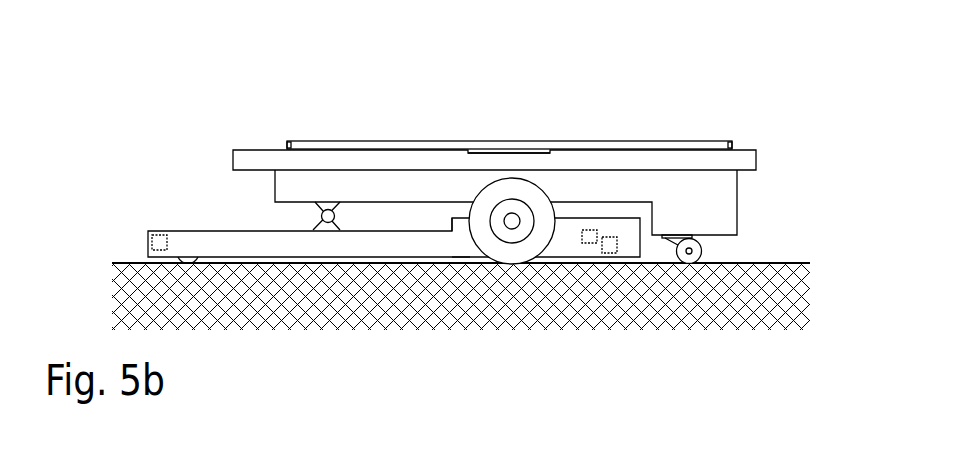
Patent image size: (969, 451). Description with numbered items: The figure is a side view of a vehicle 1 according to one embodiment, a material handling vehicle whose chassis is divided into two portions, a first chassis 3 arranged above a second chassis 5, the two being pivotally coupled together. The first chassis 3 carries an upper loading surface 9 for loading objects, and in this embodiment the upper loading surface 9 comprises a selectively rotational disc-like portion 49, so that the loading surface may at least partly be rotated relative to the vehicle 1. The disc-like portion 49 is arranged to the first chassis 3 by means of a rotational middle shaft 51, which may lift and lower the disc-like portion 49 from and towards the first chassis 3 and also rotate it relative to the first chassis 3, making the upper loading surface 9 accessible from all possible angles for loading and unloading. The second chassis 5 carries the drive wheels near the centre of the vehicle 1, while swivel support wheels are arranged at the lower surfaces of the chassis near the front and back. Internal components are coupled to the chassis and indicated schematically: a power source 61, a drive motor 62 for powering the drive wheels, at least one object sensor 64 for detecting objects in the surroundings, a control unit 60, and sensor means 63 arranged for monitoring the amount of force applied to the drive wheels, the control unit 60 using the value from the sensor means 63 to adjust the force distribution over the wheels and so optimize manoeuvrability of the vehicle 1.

The vehicle 1 is at (227, 63).
The first chassis 3 is at (730, 201).
The second chassis 5 is at (236, 241).
The upper loading surface 9 is at (643, 135).
The selectively rotational disc-like portion 49 is at (701, 146).
The rotational middle shaft 51 is at (520, 152).
The control unit 60 is at (587, 243).
The power source 61 is at (610, 253).
The drive motor 62 is at (477, 257).
The sensor means 63 is at (458, 247).
The object sensor 64 is at (157, 240).